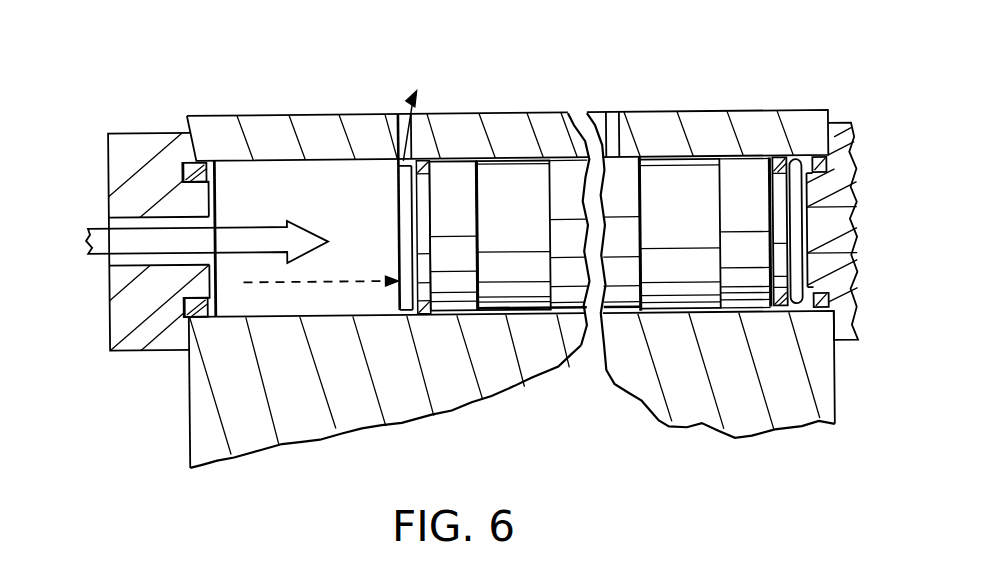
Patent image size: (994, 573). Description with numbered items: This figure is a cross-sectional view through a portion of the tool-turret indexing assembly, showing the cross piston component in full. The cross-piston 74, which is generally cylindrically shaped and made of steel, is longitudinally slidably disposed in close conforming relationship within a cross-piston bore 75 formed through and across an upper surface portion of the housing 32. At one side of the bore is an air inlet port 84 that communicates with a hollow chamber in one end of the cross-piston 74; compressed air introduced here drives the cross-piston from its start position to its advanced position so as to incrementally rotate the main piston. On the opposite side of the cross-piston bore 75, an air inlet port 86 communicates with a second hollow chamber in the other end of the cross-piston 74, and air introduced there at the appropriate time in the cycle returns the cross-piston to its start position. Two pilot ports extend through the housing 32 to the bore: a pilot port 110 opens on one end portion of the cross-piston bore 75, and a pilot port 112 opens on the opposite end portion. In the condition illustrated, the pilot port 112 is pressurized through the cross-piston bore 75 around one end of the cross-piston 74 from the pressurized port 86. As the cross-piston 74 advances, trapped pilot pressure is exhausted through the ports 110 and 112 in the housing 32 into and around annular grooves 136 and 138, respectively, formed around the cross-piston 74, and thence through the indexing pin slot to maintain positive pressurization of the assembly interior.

The housing 32 is at (268, 128).
The air inlet port 86 is at (160, 214).
The cross-piston bore 75 is at (320, 160).
The pilot port 112 is at (391, 172).
The cross-piston 74 is at (466, 152).
The annular groove 138 is at (508, 165).
The pilot port 110 is at (617, 116).
The annular groove 136 is at (700, 169).
The air inlet port 84 is at (856, 221).